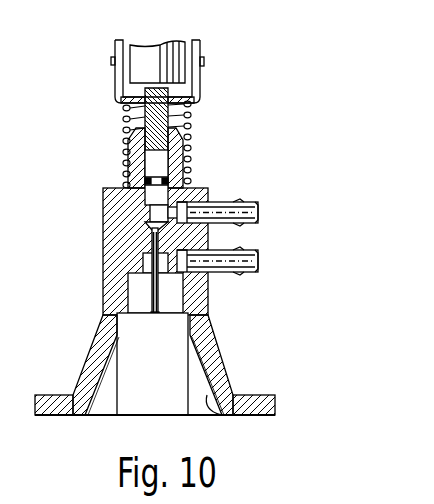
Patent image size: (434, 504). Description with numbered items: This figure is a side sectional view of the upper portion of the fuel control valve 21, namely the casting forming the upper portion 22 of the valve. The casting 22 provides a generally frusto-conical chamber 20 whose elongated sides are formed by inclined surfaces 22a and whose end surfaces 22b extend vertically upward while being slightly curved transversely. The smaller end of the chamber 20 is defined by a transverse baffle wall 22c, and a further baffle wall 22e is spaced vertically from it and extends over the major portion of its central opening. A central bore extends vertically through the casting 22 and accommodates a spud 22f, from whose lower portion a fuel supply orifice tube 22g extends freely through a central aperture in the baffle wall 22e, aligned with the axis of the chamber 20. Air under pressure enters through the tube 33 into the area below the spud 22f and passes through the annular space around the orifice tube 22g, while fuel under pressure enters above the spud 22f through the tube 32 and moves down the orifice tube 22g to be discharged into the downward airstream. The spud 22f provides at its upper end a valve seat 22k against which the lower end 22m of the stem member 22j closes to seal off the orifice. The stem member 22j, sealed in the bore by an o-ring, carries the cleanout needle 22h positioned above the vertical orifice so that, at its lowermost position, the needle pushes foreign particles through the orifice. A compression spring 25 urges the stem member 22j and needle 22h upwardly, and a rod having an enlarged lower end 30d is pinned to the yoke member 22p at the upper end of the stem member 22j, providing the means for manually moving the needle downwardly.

The frusto-conical chamber 20 is at (162, 386).
The fuel control valve 21 is at (246, 150).
The upper portion of the valve (casting) 22 is at (104, 263).
The inclined surfaces 22a is at (205, 403).
The end surfaces 22b is at (163, 403).
The transverse baffle wall 22c is at (210, 337).
The further baffle wall 22e is at (172, 284).
The spud (orifice member) 22f is at (150, 236).
The fuel supply orifice tube 22g is at (153, 302).
The cleanout needle 22h is at (155, 207).
The stem member 22j is at (139, 161).
The valve seat 22k is at (152, 216).
The lower end of stem member 22m is at (170, 197).
The yoke member 22p is at (196, 80).
The compression spring 25 is at (187, 131).
The enlarged lower end of rod 30d is at (170, 63).
The fuel tube (fuel line) 32 is at (238, 203).
The air tube 33 is at (240, 251).